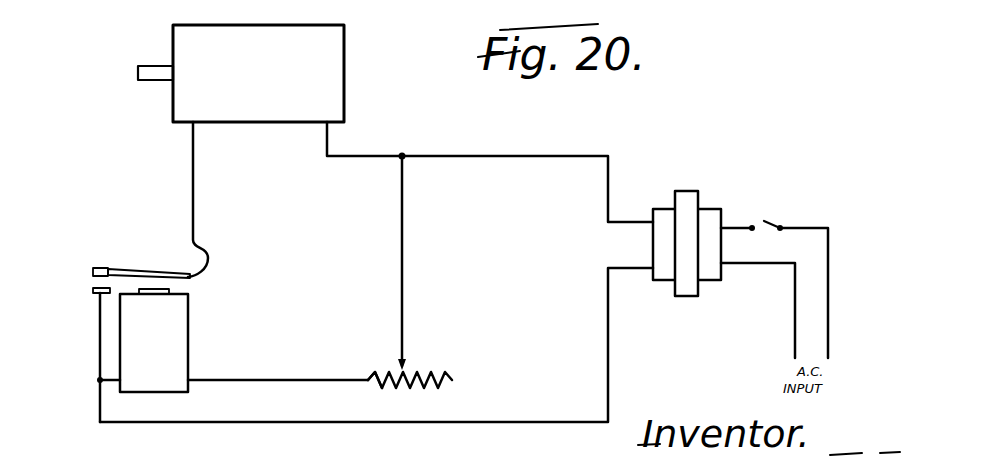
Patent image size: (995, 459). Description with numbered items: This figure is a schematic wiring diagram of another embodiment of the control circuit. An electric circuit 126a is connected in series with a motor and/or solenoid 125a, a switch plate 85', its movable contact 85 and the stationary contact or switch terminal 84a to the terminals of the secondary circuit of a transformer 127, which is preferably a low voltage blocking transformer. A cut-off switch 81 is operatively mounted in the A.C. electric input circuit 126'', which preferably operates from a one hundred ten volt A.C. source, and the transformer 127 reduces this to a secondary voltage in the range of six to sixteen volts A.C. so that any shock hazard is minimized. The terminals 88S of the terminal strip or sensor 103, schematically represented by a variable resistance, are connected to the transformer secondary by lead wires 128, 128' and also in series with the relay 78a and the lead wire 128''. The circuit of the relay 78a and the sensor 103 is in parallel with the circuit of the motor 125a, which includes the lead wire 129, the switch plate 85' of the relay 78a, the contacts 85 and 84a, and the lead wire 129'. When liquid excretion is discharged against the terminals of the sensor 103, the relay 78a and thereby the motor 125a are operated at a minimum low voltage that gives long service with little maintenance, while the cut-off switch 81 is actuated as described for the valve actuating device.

The motor and/or solenoid 125a is at (214, 82).
The lead wire 129 is at (222, 199).
The electric circuit 126a is at (471, 152).
The transformer 127 is at (686, 196).
The cut-off switch 81 is at (747, 212).
The movable contact 85 is at (90, 252).
The switch plate 85' is at (149, 243).
The stationary contact or switch terminal 84a is at (97, 295).
The relay 78a is at (154, 340).
The lead wire 128' is at (278, 362).
The terminal strip or sensor 103 is at (390, 365).
The terminals 88S is at (415, 362).
The lead wire 128 is at (433, 263).
The A.C. electric input circuit 126'' is at (750, 310).
The lead wire 129' is at (79, 376).
The lead wire 128'' is at (376, 363).